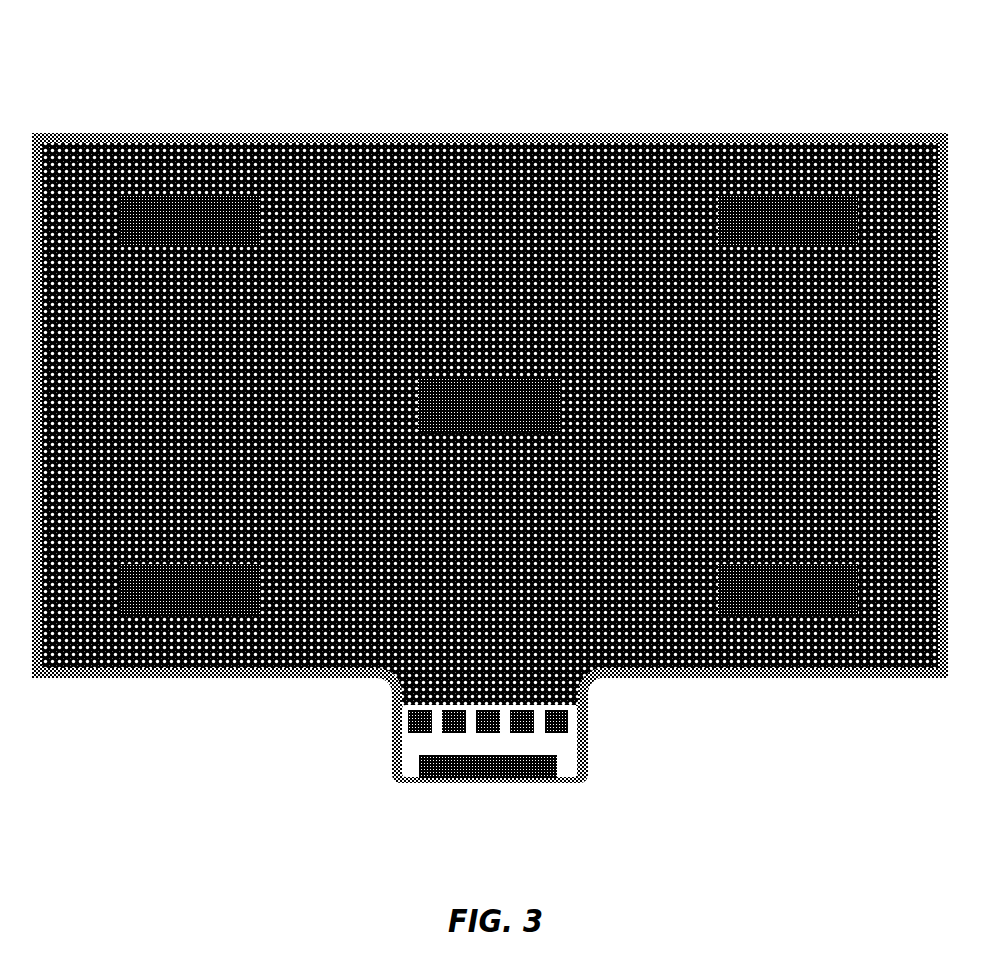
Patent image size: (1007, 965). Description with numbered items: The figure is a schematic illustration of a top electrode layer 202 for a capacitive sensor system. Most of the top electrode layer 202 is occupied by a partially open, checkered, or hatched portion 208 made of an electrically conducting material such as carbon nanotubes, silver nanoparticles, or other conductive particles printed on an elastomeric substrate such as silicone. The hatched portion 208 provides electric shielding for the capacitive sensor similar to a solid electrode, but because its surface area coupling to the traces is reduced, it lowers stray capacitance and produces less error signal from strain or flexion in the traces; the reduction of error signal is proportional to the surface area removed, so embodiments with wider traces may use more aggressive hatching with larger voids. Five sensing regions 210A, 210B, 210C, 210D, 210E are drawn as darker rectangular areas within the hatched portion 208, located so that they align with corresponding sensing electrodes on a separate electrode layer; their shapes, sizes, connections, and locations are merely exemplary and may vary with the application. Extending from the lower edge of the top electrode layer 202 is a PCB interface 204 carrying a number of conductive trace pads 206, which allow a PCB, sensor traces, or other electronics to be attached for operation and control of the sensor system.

The top electrode layer 202 is at (266, 133).
The PCB interface 204 is at (566, 742).
The conductive trace pads 206 is at (412, 716).
The hatched portion 208 is at (600, 150).
The sensing region 210A is at (150, 218).
The sensing region 210B is at (803, 215).
The sensing region 210C is at (765, 585).
The sensing region 210D is at (183, 590).
The sensing region 210E is at (468, 400).